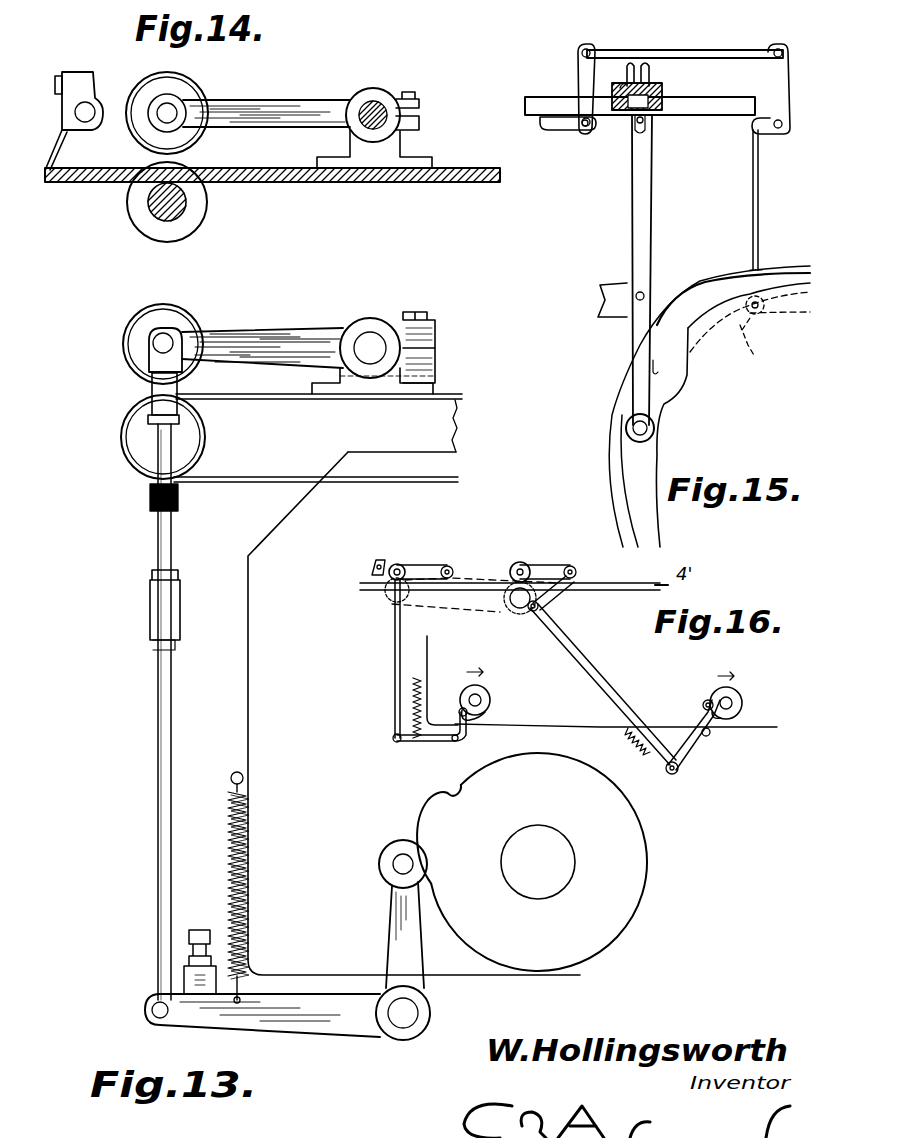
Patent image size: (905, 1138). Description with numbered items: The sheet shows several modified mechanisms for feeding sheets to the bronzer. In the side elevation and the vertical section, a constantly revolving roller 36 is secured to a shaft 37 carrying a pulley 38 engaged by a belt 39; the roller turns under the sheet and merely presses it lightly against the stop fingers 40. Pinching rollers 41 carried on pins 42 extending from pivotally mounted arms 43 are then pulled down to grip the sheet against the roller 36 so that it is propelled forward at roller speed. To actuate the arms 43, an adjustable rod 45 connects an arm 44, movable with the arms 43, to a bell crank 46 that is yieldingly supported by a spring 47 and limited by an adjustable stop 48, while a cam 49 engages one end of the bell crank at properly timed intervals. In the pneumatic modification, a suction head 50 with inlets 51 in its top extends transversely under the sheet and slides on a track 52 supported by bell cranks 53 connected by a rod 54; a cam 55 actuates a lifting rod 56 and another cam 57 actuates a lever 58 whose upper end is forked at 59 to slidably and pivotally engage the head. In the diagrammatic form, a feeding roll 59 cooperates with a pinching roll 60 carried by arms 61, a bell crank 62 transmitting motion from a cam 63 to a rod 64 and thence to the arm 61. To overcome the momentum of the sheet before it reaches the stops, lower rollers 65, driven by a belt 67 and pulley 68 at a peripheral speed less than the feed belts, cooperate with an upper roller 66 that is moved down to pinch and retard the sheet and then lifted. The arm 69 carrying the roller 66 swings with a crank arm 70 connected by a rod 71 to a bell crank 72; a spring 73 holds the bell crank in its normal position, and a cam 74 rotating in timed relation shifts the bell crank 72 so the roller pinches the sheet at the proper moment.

In FIG. 14, the roller 36 is at (206, 212).
In FIG. 14, the shaft 37 is at (165, 205).
In FIG. 13, the pulley 38 is at (196, 442).
In FIG. 13, the belt 39 is at (347, 485).
In FIG. 14, the stop fingers 40 is at (55, 158).
In FIG. 16, the stop fingers 40 is at (368, 572).
In FIG. 14, the pinching rollers 41 is at (153, 88).
In FIG. 14, the pins 42 is at (170, 112).
In FIG. 14, the arms 43 is at (298, 110).
In FIG. 13, the arm 44 is at (303, 332).
In FIG. 13, the adjustable rod 45 is at (156, 776).
In FIG. 13, the bell crank 46 is at (348, 1030).
In FIG. 13, the spring 47 is at (250, 883).
In FIG. 13, the adjustable stop 48 is at (197, 928).
In FIG. 13, the cam 49 is at (610, 930).
In FIG. 15, the suction head 50 is at (665, 90).
In FIG. 15, the inlets 51 is at (620, 85).
In FIG. 15, the track 52 is at (695, 112).
In FIG. 15, the bell cranks 53 is at (568, 130).
In FIG. 15, the rod 54 is at (735, 55).
In FIG. 15, the cam 55 is at (763, 333).
In FIG. 15, the lifting rod 56 is at (753, 210).
In FIG. 15, the cam 57 is at (668, 407).
In FIG. 15, the lever 58 is at (633, 243).
In FIG. 15, the fork / feeding roll 59 is at (640, 70).
In FIG. 16, the fork / feeding roll 59 is at (392, 600).
In FIG. 16, the pinching roll 60 is at (400, 566).
In FIG. 16, the arms 61 is at (440, 567).
In FIG. 16, the bell crank 62 is at (425, 740).
In FIG. 16, the cam 63 is at (492, 700).
In FIG. 16, the rod 64 is at (398, 679).
In FIG. 16, the lower rollers 65 is at (522, 600).
In FIG. 16, the upper rollers 66 is at (528, 566).
In FIG. 16, the belt 67 is at (478, 572).
In FIG. 16, the pulley 68 is at (490, 612).
In FIG. 16, the arm 69 is at (570, 565).
In FIG. 16, the crank arm 70 is at (560, 592).
In FIG. 16, the rod 71 is at (600, 690).
In FIG. 16, the bell crank 72 is at (700, 740).
In FIG. 16, the spring 73 is at (675, 725).
In FIG. 16, the cam 74 is at (743, 705).